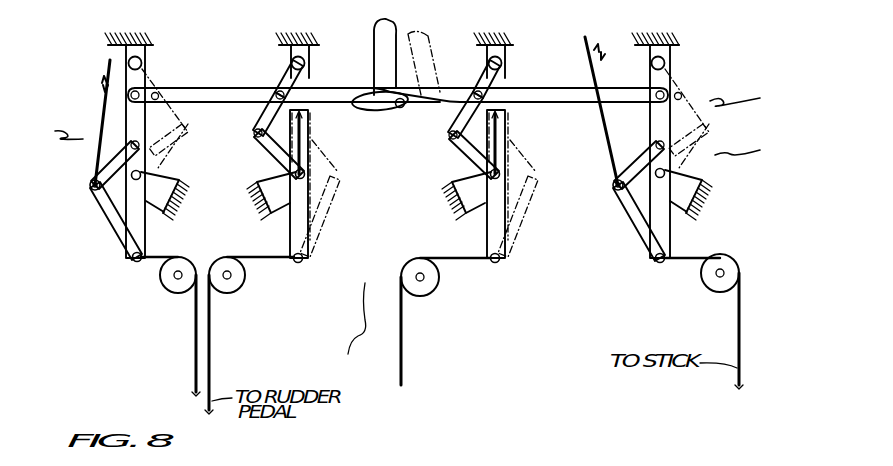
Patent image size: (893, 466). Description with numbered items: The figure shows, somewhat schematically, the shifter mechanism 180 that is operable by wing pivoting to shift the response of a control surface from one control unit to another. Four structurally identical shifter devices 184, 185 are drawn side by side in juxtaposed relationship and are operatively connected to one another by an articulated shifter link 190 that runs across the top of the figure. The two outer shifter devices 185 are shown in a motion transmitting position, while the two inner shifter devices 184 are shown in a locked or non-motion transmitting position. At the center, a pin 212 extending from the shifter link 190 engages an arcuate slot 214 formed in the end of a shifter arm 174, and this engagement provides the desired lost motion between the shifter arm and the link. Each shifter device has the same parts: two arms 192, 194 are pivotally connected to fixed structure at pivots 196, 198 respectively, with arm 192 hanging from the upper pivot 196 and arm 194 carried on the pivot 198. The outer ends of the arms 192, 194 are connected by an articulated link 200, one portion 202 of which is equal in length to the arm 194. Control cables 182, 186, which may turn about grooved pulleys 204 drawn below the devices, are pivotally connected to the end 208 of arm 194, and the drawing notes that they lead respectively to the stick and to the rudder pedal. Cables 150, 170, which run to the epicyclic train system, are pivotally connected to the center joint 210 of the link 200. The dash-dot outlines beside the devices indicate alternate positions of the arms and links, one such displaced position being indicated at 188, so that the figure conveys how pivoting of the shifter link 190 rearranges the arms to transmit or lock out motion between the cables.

The cable 150 is at (106, 108).
The cable 170 is at (303, 122).
The shifter arm 174 is at (401, 37).
The shifter mechanism 180 is at (342, 329).
The control cable 182 is at (196, 346).
The shifter device 184 is at (338, 232).
The shifter device 185 is at (397, 111).
The control cable 186 is at (210, 349).
The displaced link position 188 is at (743, 147).
The shifter link 190 is at (530, 88).
The arm 192 is at (150, 80).
The arm 194 is at (147, 228).
The pivotal connection 196 is at (146, 56).
The pivotal connection 198 is at (149, 173).
The articulated link 200 is at (146, 147).
The link portion 202 is at (100, 207).
The grooved pulley 204 is at (179, 288).
The end of arm 208 is at (144, 262).
The center joint 210 is at (89, 186).
The pin 212 is at (399, 109).
The arcuate slot 214 is at (387, 109).